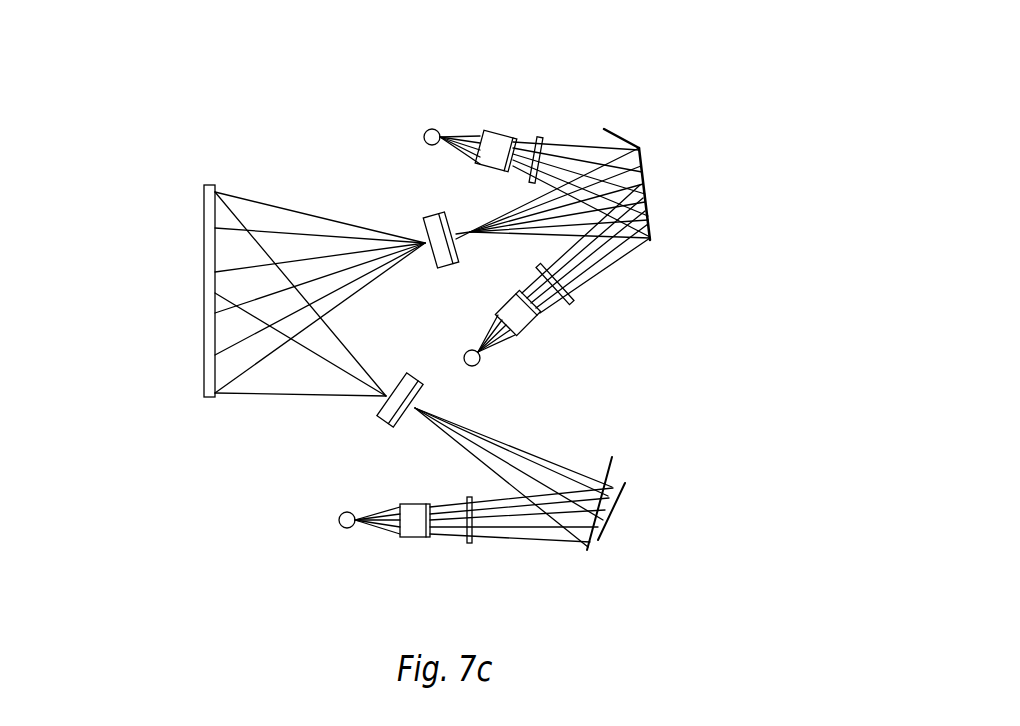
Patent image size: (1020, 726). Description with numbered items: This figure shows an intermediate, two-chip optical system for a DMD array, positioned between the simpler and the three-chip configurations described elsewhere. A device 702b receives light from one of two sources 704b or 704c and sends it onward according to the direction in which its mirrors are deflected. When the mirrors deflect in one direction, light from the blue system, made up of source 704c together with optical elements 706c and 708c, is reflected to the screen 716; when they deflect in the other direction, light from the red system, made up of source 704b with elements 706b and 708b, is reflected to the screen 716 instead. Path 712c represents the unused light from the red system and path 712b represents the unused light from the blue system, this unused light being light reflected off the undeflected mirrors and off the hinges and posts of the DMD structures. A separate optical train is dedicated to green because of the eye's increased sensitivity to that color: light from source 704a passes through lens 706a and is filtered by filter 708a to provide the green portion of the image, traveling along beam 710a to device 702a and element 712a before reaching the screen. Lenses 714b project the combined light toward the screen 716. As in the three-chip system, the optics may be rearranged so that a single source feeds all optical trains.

The screen 716 is at (204, 282).
The projection lens 714b is at (436, 213).
The blue light source 704c is at (425, 132).
The blue system optical element 706c is at (498, 134).
The blue system optical element 708c is at (541, 138).
The unused light path 712c is at (606, 128).
The device 702b is at (650, 197).
The unused light path 712b is at (628, 257).
The red light source 704b is at (470, 350).
The red system optical element 706b is at (537, 328).
The red system optical element 708b is at (574, 302).
The light beam 710a is at (493, 412).
The dichroic mirror 712a is at (621, 460).
The beam combiner 702a is at (603, 522).
The green light source 704a is at (339, 520).
The collimating lens 706a is at (416, 537).
The green filter 708a is at (474, 544).